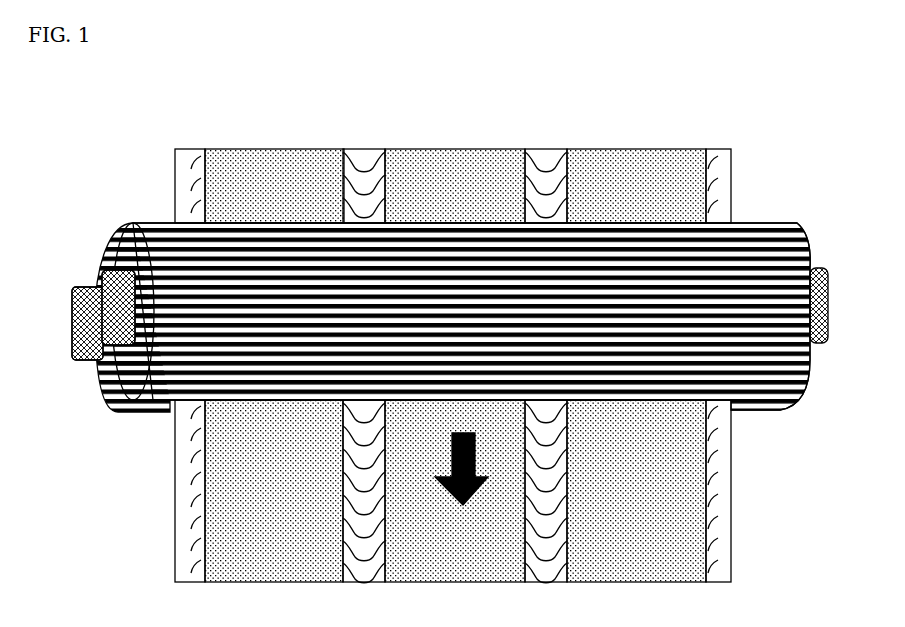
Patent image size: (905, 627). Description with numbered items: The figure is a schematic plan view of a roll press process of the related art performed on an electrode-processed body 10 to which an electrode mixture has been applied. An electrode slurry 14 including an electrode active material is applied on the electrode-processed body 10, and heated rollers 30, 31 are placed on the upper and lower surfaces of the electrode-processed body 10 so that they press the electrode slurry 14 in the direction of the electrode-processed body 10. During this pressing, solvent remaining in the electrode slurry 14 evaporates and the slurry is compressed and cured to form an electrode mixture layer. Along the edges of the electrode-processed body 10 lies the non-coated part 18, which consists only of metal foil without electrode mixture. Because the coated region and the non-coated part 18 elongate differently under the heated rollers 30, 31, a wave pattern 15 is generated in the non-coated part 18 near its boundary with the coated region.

The electrode-processed body 10 is at (166, 148).
The electrode slurry 14 is at (243, 152).
The wave pattern 15 is at (381, 152).
The non-coated part 18 is at (178, 190).
The heated roller 30 is at (125, 225).
The heated roller 31 is at (100, 253).